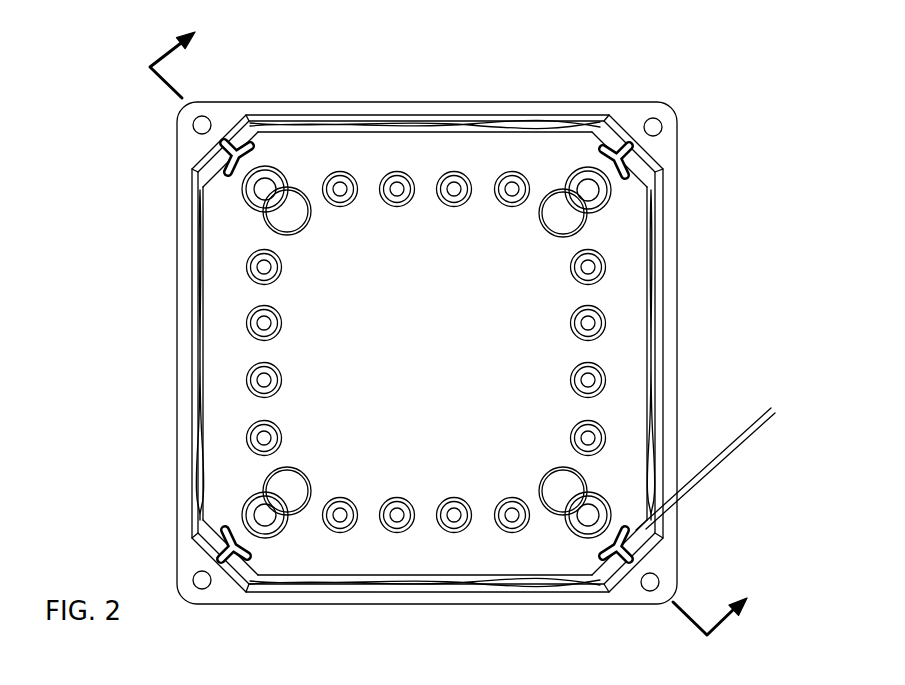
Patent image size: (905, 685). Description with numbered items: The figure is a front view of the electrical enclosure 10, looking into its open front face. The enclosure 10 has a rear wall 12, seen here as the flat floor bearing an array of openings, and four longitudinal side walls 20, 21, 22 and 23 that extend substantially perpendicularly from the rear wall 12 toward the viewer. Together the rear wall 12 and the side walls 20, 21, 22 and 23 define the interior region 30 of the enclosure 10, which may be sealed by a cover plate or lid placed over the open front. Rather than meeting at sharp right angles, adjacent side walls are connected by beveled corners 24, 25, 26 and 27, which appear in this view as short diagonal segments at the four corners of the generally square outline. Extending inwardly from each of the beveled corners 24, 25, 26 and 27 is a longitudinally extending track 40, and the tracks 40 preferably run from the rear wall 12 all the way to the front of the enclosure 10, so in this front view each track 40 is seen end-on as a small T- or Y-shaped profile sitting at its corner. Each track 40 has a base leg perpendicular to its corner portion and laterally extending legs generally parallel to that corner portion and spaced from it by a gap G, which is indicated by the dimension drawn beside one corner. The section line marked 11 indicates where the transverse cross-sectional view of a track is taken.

The electrical enclosure 10 is at (530, 80).
The section line 11 is at (441, 323).
The rear wall 12 is at (223, 303).
The side wall 20 is at (190, 495).
The side wall 21 is at (372, 112).
The side wall 22 is at (663, 208).
The side wall 23 is at (512, 585).
The beveled corner 24 is at (202, 152).
The beveled corner 25 is at (625, 112).
The beveled corner 26 is at (628, 580).
The beveled corner 27 is at (200, 550).
The interior region 30 is at (412, 366).
The track 40 is at (253, 138).
The gap G is at (713, 397).